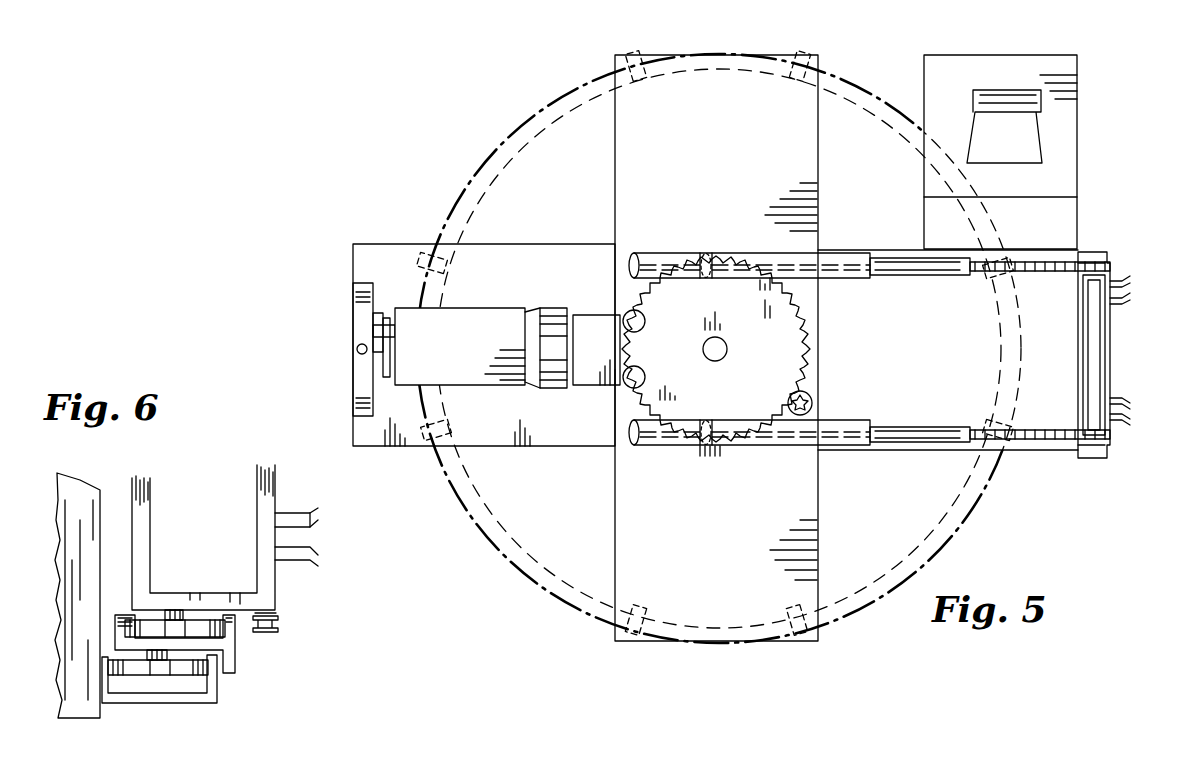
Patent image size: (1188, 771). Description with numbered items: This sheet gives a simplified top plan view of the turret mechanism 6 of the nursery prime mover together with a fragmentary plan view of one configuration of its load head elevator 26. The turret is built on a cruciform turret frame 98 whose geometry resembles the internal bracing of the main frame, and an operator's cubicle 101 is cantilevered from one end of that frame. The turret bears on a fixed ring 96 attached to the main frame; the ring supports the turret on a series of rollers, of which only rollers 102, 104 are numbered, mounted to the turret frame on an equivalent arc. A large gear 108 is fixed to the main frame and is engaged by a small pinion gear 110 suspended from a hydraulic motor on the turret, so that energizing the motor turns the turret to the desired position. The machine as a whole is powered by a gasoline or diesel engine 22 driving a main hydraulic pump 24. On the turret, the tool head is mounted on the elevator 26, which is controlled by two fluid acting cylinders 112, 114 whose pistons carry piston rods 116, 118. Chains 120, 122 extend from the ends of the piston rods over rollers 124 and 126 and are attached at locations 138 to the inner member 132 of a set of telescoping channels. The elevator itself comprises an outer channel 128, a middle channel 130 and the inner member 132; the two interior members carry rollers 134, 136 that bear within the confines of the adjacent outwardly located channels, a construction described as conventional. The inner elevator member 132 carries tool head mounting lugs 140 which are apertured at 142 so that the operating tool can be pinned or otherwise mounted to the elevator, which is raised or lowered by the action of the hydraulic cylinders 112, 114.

In FIG. 5, the turret mechanism 6 is at (411, 218).
In FIG. 5, the engine 22 is at (470, 310).
In FIG. 5, the main hydraulic pump 24 is at (555, 308).
In FIG. 5, the elevator 26 is at (1122, 266).
In FIG. 5, the fixed ring 96 is at (481, 538).
In FIG. 5, the turret frame 98 is at (565, 447).
In FIG. 6, the turret frame 98 is at (95, 536).
In FIG. 5, the operator's cubicle 101 is at (1080, 150).
In FIG. 5, the roller 102 is at (638, 612).
In FIG. 5, the roller 104 is at (794, 613).
In FIG. 5, the large gear 108 is at (793, 347).
In FIG. 5, the pinion gear 110 is at (806, 393).
In FIG. 5, the fluid acting cylinder 112 is at (658, 262).
In FIG. 5, the fluid acting cylinder 114 is at (690, 446).
In FIG. 5, the piston rod 116 is at (904, 272).
In FIG. 5, the piston rod 118 is at (918, 430).
In FIG. 5, the chain 120 is at (1046, 273).
In FIG. 5, the chain 122 is at (1033, 436).
In FIG. 5, the roller 124 is at (1093, 280).
In FIG. 5, the roller 126 is at (1092, 428).
In FIG. 6, the outer channel 128 is at (200, 703).
In FIG. 6, the middle channel 130 is at (237, 655).
In FIG. 6, the inner member 132 is at (275, 582).
In FIG. 6, the roller 134 is at (192, 670).
In FIG. 6, the roller 136 is at (225, 628).
In FIG. 6, the attachment location 138 is at (278, 625).
In FIG. 6, the tool head mounting lug 140 is at (320, 522).
In FIG. 6, the aperture 142 is at (298, 516).